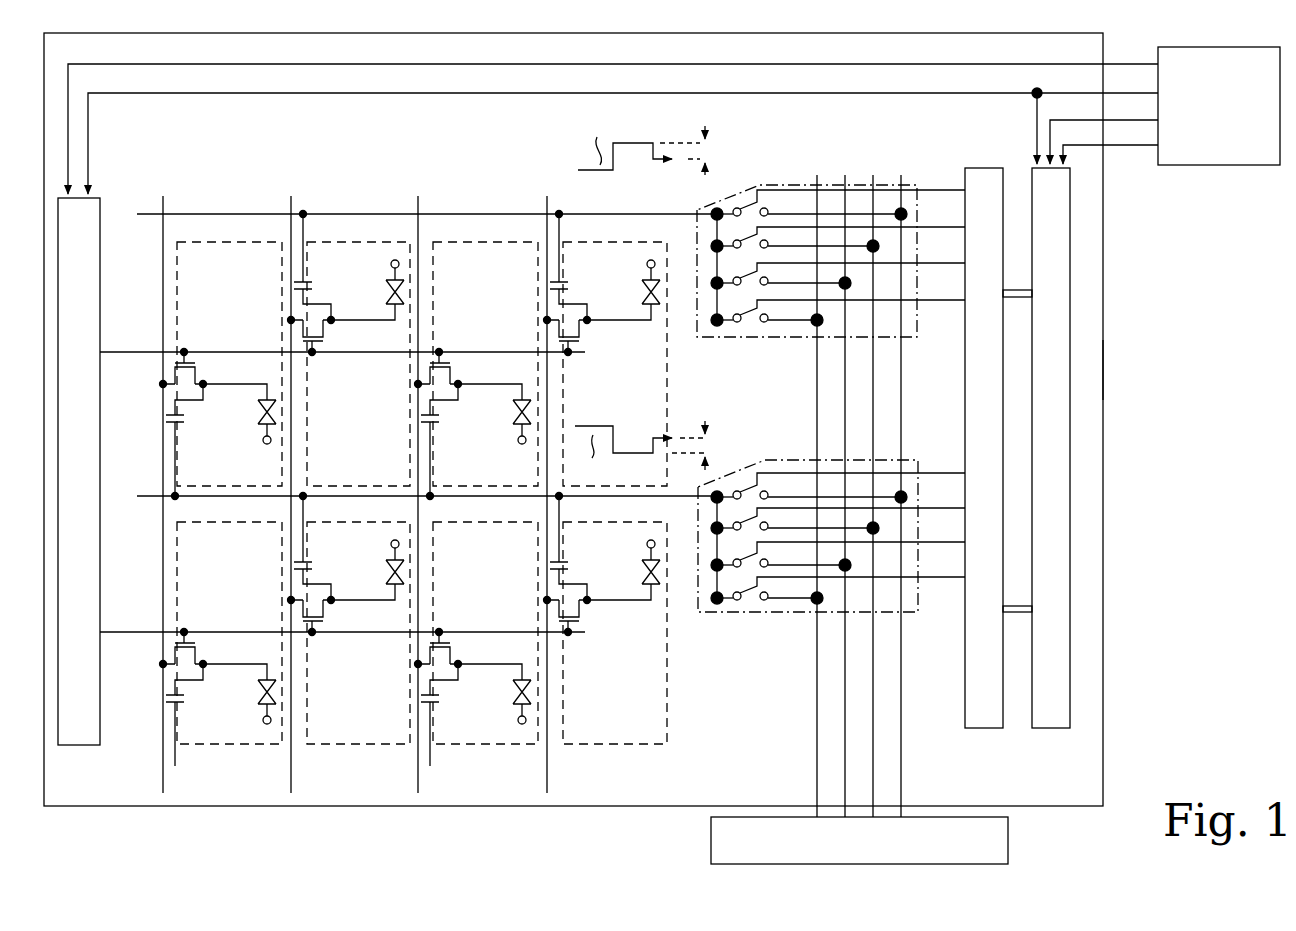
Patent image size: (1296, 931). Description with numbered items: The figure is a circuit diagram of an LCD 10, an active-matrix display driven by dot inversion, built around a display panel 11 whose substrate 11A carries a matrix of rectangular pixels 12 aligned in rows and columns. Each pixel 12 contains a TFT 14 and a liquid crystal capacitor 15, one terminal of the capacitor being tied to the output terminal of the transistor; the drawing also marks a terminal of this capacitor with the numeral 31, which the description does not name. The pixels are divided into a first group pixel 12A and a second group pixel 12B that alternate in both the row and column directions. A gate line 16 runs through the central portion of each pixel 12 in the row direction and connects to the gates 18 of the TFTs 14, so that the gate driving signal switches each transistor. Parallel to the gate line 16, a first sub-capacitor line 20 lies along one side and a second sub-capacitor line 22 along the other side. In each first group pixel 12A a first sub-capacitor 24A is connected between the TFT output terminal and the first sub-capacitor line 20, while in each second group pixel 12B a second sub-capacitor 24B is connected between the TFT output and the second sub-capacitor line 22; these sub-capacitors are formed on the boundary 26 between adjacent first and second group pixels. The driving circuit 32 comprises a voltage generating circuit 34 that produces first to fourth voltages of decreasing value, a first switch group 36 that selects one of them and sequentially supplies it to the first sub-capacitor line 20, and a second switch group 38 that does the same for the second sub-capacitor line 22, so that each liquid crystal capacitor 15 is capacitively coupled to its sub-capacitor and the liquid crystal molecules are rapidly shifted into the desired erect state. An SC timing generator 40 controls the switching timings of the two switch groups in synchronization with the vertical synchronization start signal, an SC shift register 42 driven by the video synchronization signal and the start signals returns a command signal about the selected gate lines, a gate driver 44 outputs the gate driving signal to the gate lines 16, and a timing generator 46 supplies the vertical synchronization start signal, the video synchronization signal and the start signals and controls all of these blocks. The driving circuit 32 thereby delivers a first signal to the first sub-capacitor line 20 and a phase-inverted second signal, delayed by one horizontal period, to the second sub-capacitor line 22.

The LCD 10 is at (1178, 447).
The display panel 11 is at (1108, 299).
The substrate 11A is at (1088, 374).
The pixel 12 is at (426, 487).
The first group pixel 12A is at (220, 240).
The second group pixel 12B is at (350, 240).
The TFT 14 is at (200, 378).
The liquid crystal capacitor 15 is at (258, 406).
The gate line 16 is at (137, 357).
The gate 18 is at (185, 352).
The first sub-capacitor line 20 is at (232, 500).
The second sub-capacitor line 22 is at (140, 212).
The first sub-capacitor 24A is at (184, 425).
The second sub-capacitor 24B is at (312, 282).
The boundary 26 is at (172, 272).
The common electrode terminal 31 is at (262, 437).
The driving circuit 32 is at (669, 455).
The voltage generating circuit 34 is at (1012, 842).
The first switch group 36 is at (725, 614).
The second switch group 38 is at (725, 340).
The SC timing generator 40 is at (985, 730).
The SC shift register 42 is at (1050, 730).
The gate driver 44 is at (80, 748).
The timing generator 46 is at (1218, 167).